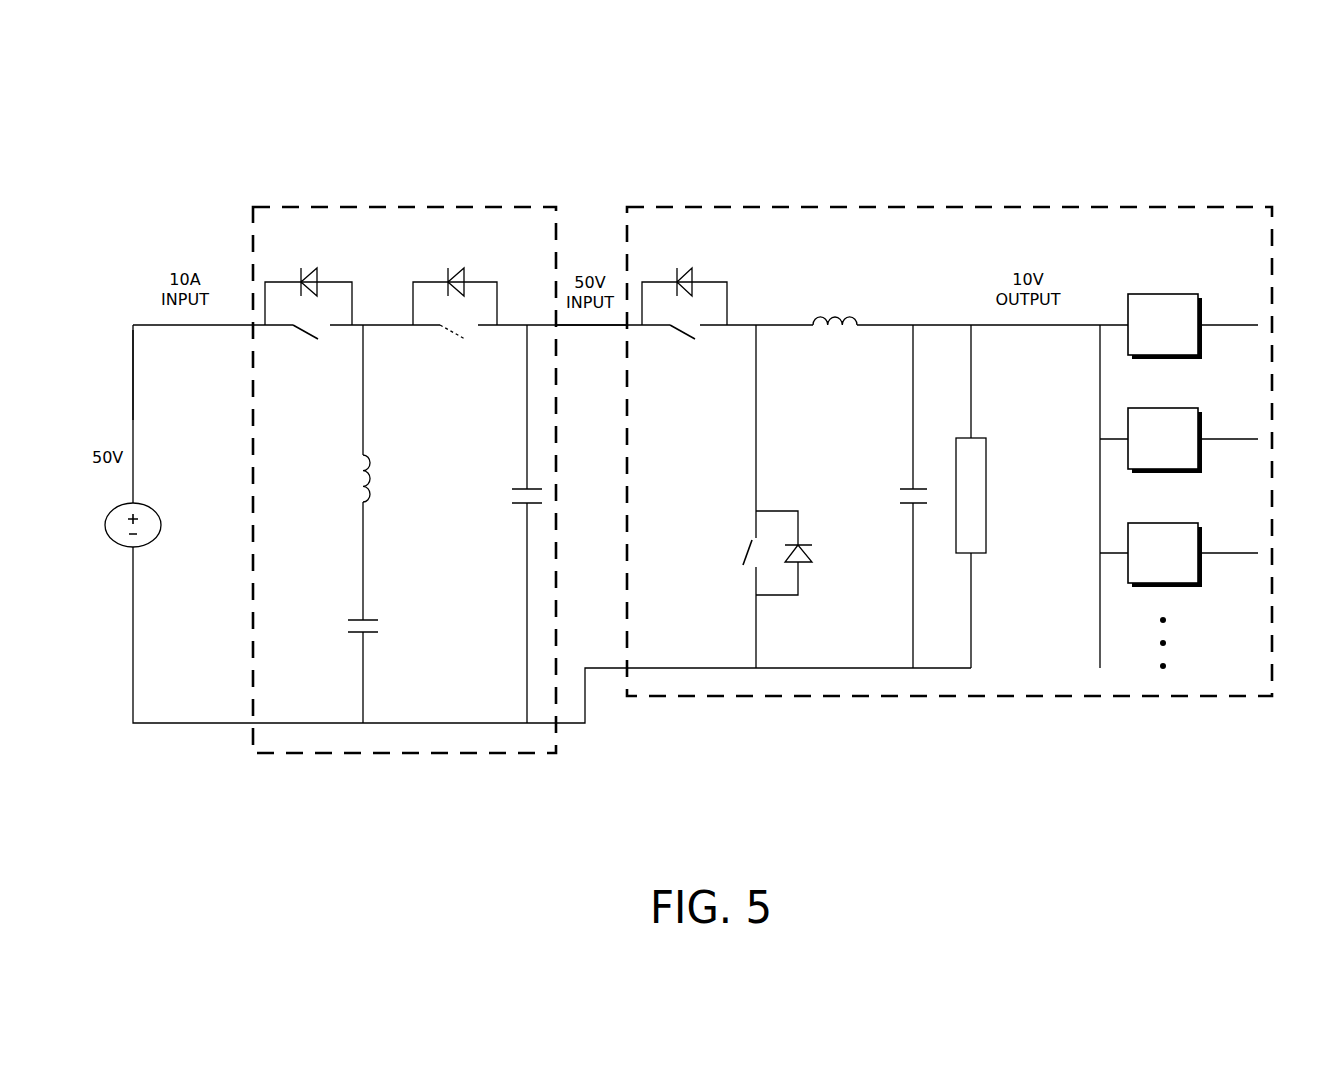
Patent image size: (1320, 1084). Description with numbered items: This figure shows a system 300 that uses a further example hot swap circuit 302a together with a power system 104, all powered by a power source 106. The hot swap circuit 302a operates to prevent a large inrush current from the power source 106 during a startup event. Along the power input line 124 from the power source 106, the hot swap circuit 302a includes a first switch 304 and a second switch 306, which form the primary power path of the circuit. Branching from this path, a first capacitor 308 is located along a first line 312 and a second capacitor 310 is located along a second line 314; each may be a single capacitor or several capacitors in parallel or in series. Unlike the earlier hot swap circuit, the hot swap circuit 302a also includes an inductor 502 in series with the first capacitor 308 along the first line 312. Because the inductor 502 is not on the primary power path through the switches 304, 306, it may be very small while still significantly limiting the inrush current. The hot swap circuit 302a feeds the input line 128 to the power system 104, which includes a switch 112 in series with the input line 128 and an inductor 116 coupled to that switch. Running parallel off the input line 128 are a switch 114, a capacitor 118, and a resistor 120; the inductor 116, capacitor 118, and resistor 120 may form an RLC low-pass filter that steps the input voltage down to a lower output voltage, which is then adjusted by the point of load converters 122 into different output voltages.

The system 300 is at (1213, 106).
The hot swap circuit 302a is at (404, 452).
The power system 104 is at (949, 423).
The power source 106 is at (140, 546).
The power input line 124 is at (136, 426).
The input line 128 is at (569, 337).
The first switch 304 is at (344, 340).
The second switch 306 is at (490, 340).
The first capacitor 308 is at (371, 636).
The second capacitor 310 is at (516, 484).
The first line 312 is at (366, 426).
The second line 314 is at (523, 426).
The inductor 502 is at (366, 504).
The switch 112 is at (720, 340).
The switch 114 is at (745, 538).
The inductor 116 is at (851, 316).
The capacitor 118 is at (903, 482).
The resistor 120 is at (979, 435).
The point of load converters 122 is at (1197, 272).